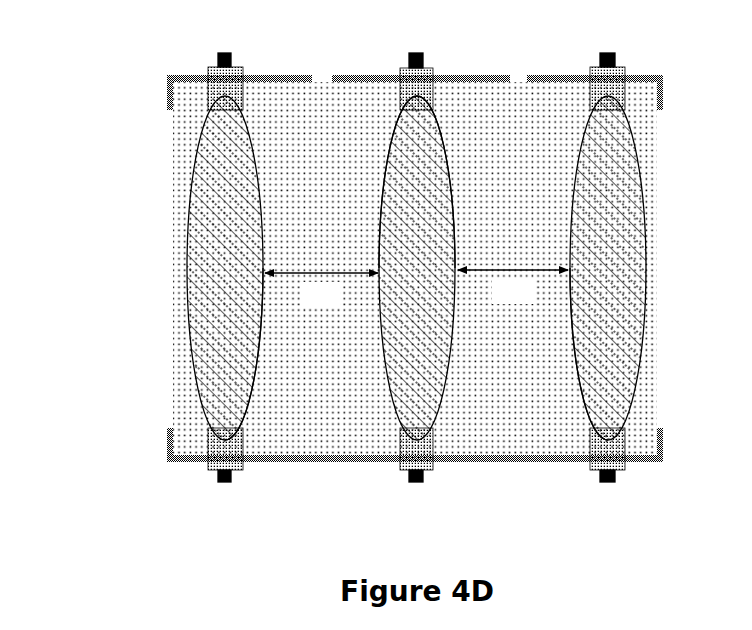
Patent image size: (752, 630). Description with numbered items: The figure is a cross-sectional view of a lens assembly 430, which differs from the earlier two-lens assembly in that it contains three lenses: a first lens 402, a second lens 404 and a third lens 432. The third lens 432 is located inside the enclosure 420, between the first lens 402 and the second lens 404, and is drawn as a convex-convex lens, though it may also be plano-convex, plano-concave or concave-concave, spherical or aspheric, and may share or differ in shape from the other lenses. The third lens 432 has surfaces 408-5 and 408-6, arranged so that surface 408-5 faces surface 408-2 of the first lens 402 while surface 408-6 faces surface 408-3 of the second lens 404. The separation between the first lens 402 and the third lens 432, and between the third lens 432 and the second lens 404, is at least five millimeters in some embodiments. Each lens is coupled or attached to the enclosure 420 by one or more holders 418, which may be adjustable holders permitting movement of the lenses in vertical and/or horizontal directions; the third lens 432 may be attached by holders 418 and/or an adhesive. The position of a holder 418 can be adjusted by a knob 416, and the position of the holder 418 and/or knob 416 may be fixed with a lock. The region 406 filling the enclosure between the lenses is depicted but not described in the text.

The lens assembly 430 is at (136, 45).
The first lens 402 is at (225, 268).
The third lens 432 is at (417, 268).
The second lens 404 is at (608, 268).
The fluid medium 406 is at (415, 268).
The surface of first lens 408-2 is at (260, 350).
The surface of second lens 408-3 is at (578, 365).
The surface of third lens 408-5 is at (380, 232).
The surface of third lens 408-6 is at (456, 213).
The knob 416 is at (417, 54).
The holder 418 is at (396, 81).
The enclosure 420 is at (325, 460).